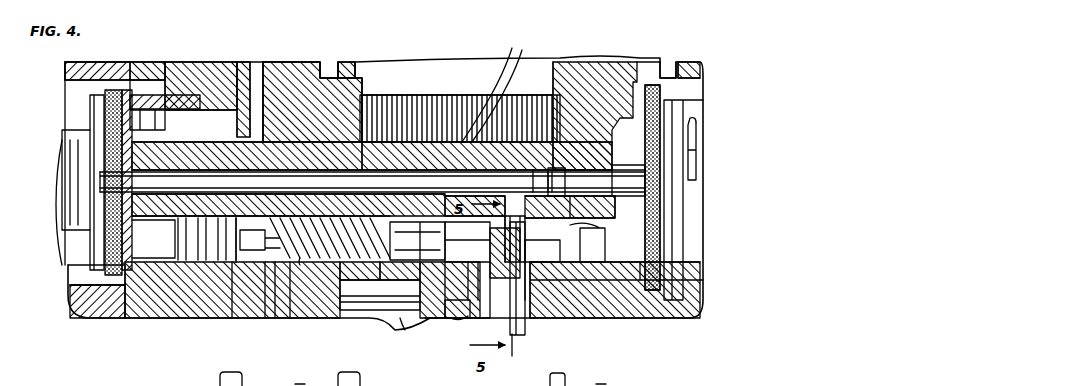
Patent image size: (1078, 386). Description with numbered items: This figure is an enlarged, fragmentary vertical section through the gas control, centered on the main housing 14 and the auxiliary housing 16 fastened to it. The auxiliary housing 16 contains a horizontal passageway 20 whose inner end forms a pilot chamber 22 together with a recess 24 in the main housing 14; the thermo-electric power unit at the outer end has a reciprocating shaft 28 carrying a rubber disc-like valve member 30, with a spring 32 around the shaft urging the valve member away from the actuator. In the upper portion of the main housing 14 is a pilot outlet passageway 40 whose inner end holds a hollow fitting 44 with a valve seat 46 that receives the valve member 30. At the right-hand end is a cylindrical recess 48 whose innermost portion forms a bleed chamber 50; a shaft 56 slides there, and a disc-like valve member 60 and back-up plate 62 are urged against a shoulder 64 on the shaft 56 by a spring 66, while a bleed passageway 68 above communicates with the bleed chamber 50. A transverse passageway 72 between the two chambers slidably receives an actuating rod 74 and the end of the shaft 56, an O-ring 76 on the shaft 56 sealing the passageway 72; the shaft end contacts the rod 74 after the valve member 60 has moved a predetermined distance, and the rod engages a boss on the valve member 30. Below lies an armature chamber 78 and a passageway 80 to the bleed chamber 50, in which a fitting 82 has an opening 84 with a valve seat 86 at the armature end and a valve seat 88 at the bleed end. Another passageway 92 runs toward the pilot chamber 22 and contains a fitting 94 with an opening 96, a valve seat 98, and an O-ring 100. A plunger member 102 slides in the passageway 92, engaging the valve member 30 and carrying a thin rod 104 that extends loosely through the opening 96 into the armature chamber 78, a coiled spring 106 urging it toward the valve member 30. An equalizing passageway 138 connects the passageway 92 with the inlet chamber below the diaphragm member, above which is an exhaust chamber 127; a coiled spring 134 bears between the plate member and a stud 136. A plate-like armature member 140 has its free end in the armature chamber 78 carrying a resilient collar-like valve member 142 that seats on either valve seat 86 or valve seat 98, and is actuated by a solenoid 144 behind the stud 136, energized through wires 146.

The main housing 14 is at (334, 56).
The auxiliary housing 16 is at (68, 56).
The passageway 20 is at (86, 318).
The pilot chamber 22 is at (72, 265).
The recess 24 is at (170, 208).
The reciprocating shaft 28 is at (60, 222).
The valve member 30 is at (92, 108).
The spring 32 is at (64, 140).
The pilot outlet passageway 40 is at (268, 58).
The hollow fitting 44 is at (205, 88).
The valve seat 46 is at (150, 88).
The cylindrical recess 48 is at (704, 68).
The bleed chamber 50 is at (700, 90).
The shaft 56 is at (540, 168).
The valve member 60 is at (665, 280).
The back-up plate 62 is at (698, 275).
The shoulder 64 is at (642, 162).
The spring 66 is at (692, 243).
The bleed passageway 68 is at (676, 62).
The passageway 72 is at (333, 172).
The actuating rod 74 is at (266, 172).
The O-ring 76 is at (560, 170).
The armature chamber 78 is at (522, 338).
The passageway 80 is at (543, 266).
The fitting 82 is at (615, 279).
The opening 84 is at (578, 266).
The valve seat 86 is at (547, 229).
The valve seat 88 is at (592, 229).
The passageway 92 is at (296, 322).
The fitting 94 is at (467, 270).
The opening 96 is at (417, 253).
The valve seat 98 is at (526, 222).
The O-ring 100 is at (446, 210).
The plunger member 102 is at (156, 318).
The rod 104 is at (300, 266).
The coiled spring 106 is at (276, 322).
The exhaust chamber 127 is at (406, 330).
The coiled spring 134 is at (428, 330).
The stud 136 is at (447, 320).
The equalizing passageway 138 is at (250, 310).
The armature member 140 is at (530, 302).
The valve member 142 is at (462, 291).
The solenoid 144 is at (382, 304).
The wires 146 is at (496, 78).